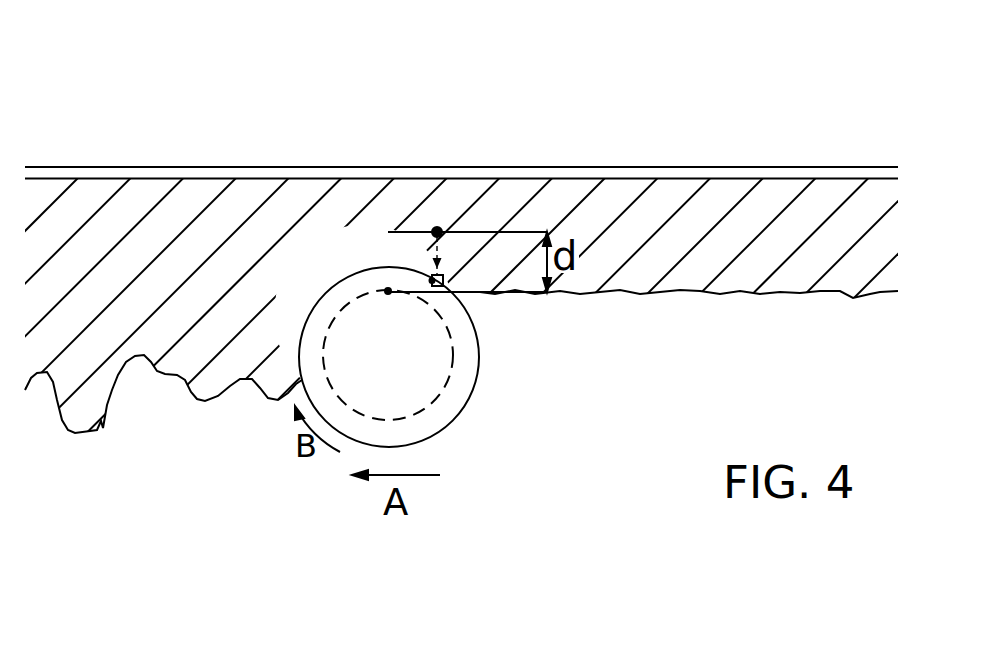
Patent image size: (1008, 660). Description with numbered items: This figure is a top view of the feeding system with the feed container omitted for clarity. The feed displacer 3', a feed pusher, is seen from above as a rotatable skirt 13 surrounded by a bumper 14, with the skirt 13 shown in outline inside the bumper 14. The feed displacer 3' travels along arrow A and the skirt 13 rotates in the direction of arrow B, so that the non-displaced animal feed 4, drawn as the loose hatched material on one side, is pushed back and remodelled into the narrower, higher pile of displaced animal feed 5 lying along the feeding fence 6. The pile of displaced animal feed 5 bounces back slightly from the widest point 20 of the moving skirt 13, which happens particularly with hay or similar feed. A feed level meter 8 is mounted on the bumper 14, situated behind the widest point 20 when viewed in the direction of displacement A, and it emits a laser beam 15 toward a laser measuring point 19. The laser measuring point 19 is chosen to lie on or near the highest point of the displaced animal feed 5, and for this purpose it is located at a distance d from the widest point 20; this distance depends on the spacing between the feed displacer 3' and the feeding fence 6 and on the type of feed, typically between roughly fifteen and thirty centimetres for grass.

The feed displacer 3' is at (595, 503).
The animal feed 4 is at (157, 288).
The displaced animal feed 5 is at (736, 242).
The feeding fence 6 is at (653, 173).
The feed level meter 8 is at (432, 282).
The rotatable skirt 13 is at (448, 380).
The bumper 14 is at (452, 418).
The laser beam 15 is at (432, 279).
The laser measuring point 19 is at (439, 231).
The widest point 20 is at (388, 291).